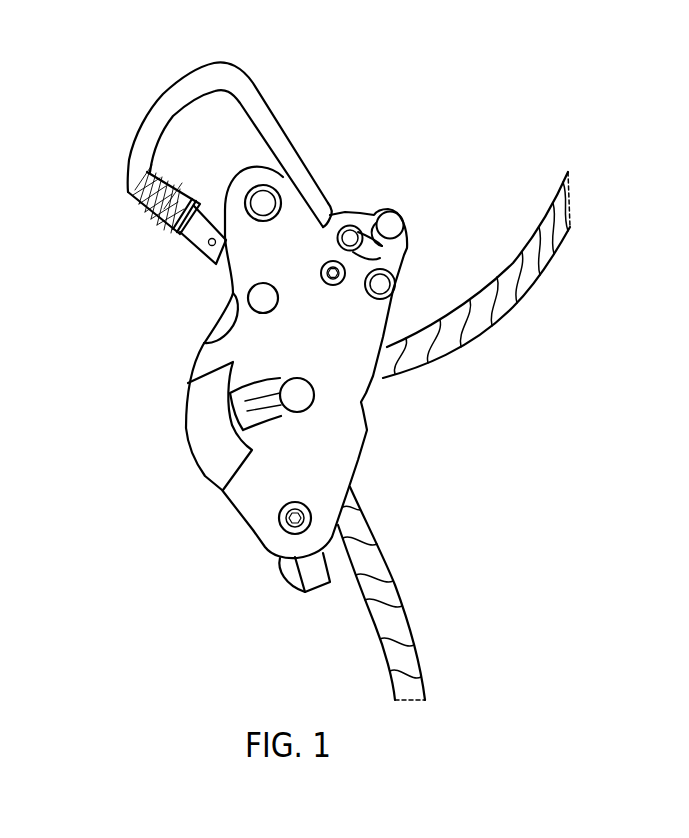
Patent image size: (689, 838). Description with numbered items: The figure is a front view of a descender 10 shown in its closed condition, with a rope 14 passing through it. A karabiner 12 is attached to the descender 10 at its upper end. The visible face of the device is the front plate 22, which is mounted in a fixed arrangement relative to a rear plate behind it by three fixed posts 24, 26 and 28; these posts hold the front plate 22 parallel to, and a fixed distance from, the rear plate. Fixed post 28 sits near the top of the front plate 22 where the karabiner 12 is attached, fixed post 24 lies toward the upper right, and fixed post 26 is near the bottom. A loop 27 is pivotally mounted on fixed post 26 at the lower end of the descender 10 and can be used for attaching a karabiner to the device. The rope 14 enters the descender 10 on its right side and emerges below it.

The descender 10 is at (148, 316).
The karabiner 12 is at (234, 71).
The rope 14 is at (538, 258).
The front plate 22 is at (343, 444).
The fixed post 24 is at (337, 262).
The fixed post 26 is at (285, 522).
The loop 27 is at (313, 582).
The fixed post 28 is at (264, 204).